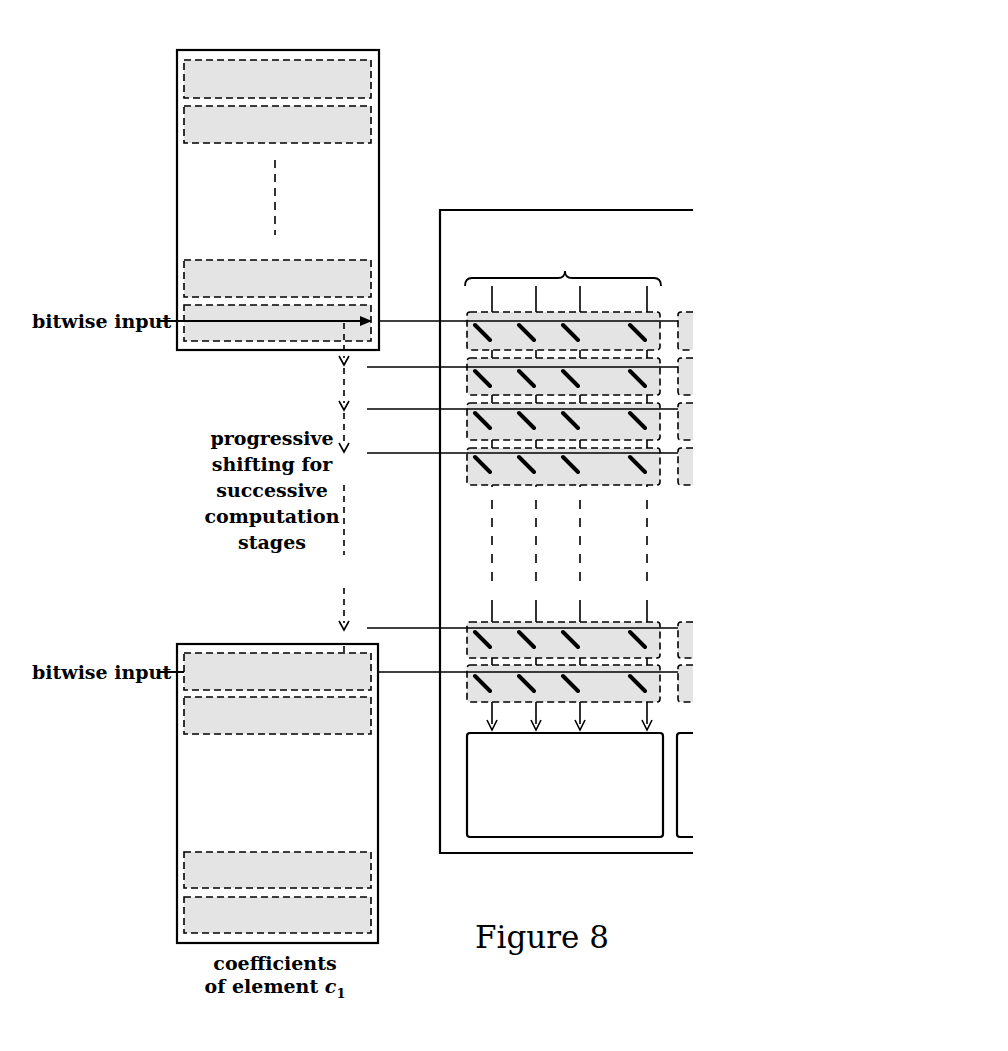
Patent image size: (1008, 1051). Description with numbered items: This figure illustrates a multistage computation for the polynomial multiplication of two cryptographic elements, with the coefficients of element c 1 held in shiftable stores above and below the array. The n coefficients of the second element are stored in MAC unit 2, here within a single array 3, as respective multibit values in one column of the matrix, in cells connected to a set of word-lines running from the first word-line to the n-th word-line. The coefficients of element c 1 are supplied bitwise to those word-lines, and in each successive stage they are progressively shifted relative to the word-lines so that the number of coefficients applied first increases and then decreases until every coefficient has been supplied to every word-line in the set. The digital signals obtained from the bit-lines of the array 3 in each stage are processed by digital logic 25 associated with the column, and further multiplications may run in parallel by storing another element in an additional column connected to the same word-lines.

The coefficients of element c1 (memory column) 1 is at (278, 175).
The MAC unit 2 is at (563, 475).
The array 3 is at (530, 531).
The digital logic 25 is at (565, 785).